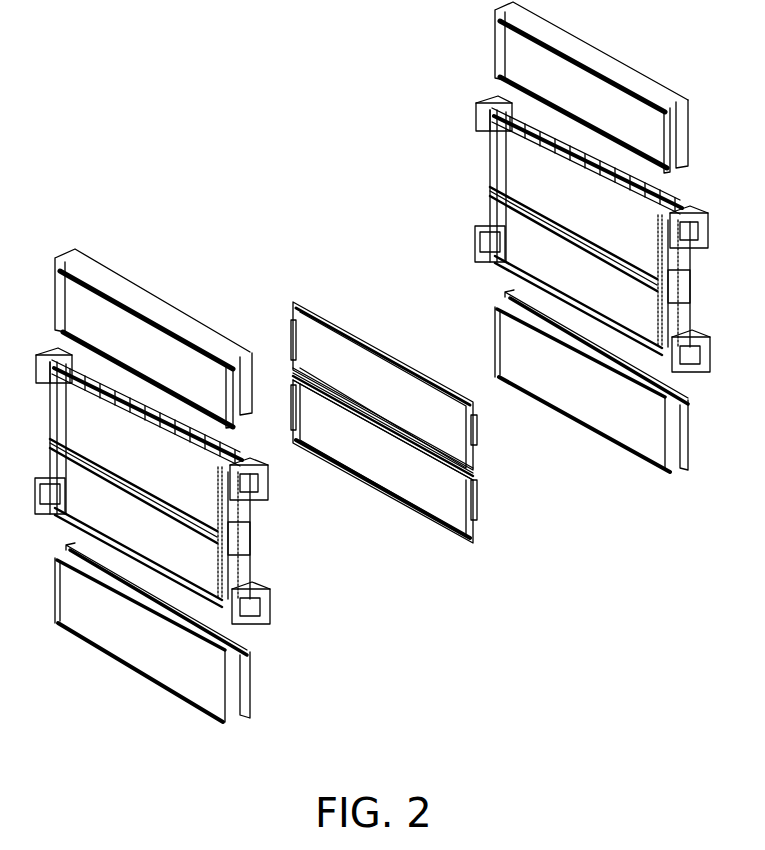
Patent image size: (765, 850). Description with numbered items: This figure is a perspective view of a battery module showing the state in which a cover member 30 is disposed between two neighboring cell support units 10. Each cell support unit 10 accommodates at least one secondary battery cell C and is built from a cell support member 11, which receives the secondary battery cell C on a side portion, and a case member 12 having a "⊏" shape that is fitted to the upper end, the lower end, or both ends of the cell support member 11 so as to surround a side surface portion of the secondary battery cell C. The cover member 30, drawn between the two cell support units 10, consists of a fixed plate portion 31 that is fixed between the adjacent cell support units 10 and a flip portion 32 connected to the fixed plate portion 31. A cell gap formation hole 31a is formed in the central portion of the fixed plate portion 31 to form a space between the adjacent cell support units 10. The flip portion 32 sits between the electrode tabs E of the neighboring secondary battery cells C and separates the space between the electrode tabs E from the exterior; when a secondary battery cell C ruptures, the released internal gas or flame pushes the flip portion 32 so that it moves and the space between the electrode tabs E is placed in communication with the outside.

The cell support unit 10 is at (394, 12).
The cell support member 11 is at (517, 107).
The case member 12 is at (512, 50).
The cover member 30 is at (566, 455).
The fixed plate portion 31 is at (473, 475).
The cell gap formation hole 31a is at (430, 418).
The flip portion 32 is at (474, 520).
The secondary battery cell C is at (221, 517).
The electrode tab E is at (242, 620).